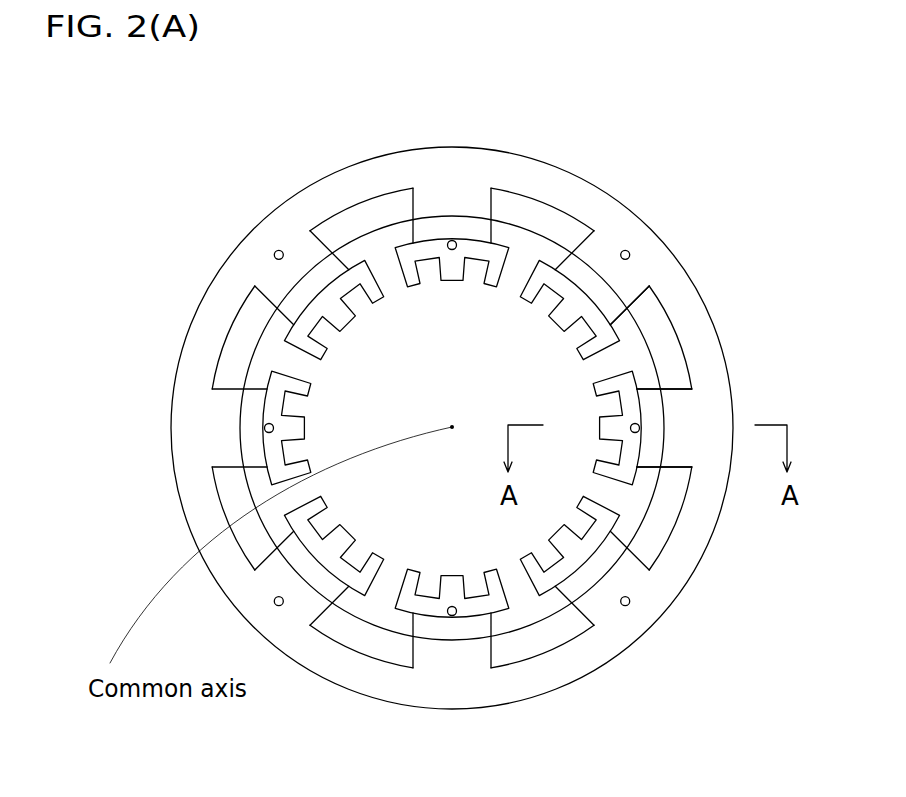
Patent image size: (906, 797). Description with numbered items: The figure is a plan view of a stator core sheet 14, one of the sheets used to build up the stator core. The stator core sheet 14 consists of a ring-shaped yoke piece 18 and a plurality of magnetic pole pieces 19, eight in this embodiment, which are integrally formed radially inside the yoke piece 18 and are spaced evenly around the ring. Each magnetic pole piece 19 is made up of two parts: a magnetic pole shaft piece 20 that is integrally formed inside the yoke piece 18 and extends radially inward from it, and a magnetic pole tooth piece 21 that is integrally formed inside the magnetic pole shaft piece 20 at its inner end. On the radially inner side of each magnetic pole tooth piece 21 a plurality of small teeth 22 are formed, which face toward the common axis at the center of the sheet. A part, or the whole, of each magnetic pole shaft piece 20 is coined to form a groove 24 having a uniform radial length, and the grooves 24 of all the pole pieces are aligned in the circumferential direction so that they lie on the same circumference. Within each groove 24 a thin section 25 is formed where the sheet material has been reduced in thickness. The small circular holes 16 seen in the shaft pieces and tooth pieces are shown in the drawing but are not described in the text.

The stator core sheet 14 is at (650, 192).
The positioning hole 16 is at (452, 616).
The yoke piece 18 is at (685, 293).
The magnetic pole piece 19 is at (606, 63).
The magnetic pole shaft piece 20 is at (458, 200).
The magnetic pole tooth piece 21 is at (472, 250).
The small teeth 22 is at (443, 280).
The groove 24 is at (607, 297).
The thin section 25 is at (613, 302).